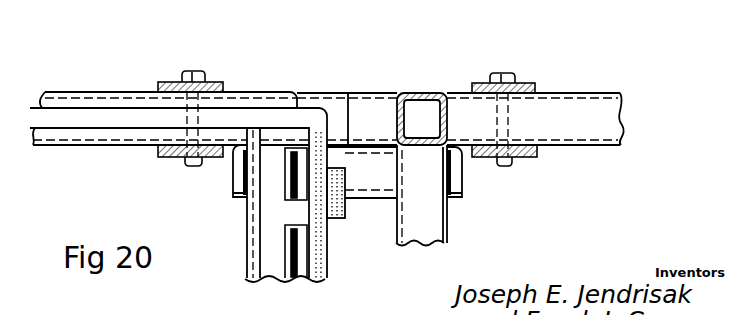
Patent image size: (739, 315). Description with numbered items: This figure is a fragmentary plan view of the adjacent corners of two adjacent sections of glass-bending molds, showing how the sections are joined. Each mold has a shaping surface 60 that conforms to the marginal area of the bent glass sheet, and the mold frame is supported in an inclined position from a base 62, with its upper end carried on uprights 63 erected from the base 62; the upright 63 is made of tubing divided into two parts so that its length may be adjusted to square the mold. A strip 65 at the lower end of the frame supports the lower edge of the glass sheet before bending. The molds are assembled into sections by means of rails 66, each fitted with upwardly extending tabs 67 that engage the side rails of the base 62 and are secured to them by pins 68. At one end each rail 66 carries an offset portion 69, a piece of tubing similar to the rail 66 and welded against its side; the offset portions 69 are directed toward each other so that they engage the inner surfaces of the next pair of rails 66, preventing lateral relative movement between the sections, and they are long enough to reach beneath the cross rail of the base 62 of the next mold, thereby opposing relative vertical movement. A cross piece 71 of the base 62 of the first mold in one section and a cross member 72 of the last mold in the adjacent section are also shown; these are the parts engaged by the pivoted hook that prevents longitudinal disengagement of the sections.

The shaping surface 60 is at (242, 118).
The base 62 is at (102, 100).
The upright 63 is at (423, 92).
The strip 65 is at (337, 207).
The rail 66 is at (316, 102).
The tab 67 is at (216, 84).
The pin 68 is at (193, 75).
The offset portion 69 is at (374, 180).
The cross piece 71 is at (250, 223).
The cross member 72 is at (430, 220).